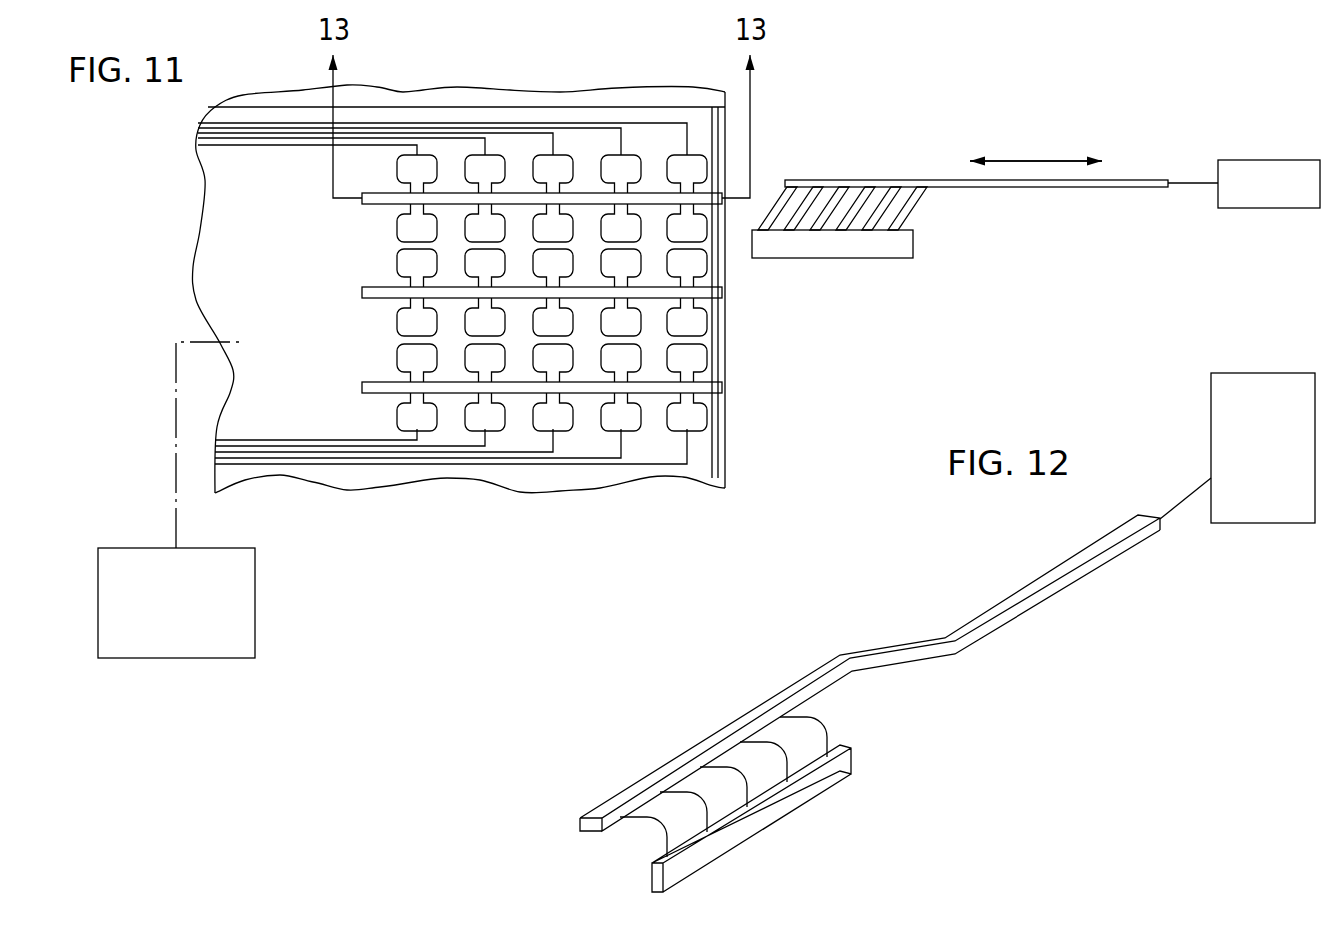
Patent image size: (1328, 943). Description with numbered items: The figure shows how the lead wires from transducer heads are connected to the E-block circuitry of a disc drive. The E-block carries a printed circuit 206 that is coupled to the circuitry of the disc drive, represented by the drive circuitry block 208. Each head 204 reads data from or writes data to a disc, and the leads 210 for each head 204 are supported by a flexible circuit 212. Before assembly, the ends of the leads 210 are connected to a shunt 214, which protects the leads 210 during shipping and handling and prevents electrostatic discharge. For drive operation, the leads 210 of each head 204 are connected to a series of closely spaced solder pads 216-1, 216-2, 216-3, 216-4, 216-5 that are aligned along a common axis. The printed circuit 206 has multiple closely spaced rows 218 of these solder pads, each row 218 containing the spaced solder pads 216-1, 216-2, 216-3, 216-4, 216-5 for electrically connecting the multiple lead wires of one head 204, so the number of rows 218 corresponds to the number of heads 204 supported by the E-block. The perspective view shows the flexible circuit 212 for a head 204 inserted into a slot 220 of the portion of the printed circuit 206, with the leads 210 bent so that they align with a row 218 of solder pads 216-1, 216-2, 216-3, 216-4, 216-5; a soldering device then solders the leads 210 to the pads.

In FIG. 11, the head 204 is at (1238, 208).
In FIG. 12, the head 204 is at (1250, 512).
In FIG. 11, the printed circuit 206 is at (616, 92).
In FIG. 11, the disc drive circuitry 208 is at (262, 610).
In FIG. 11, the head leads 210 is at (860, 188).
In FIG. 12, the head leads 210 is at (748, 795).
In FIG. 11, the flexible circuit 212 is at (861, 173).
In FIG. 12, the flexible circuit 212 is at (817, 677).
In FIG. 11, the shunt 214 is at (897, 252).
In FIG. 12, the shunt 214 is at (793, 800).
In FIG. 11, the solder pad 216-1 is at (693, 155).
In FIG. 11, the solder pad 216-2 is at (628, 155).
In FIG. 11, the solder pad 216-3 is at (560, 155).
In FIG. 11, the solder pad 216-4 is at (492, 155).
In FIG. 11, the solder pad 216-5 is at (424, 155).
In FIG. 11, the row of solder pads 218 is at (396, 160).
In FIG. 11, the slot 220 is at (723, 190).